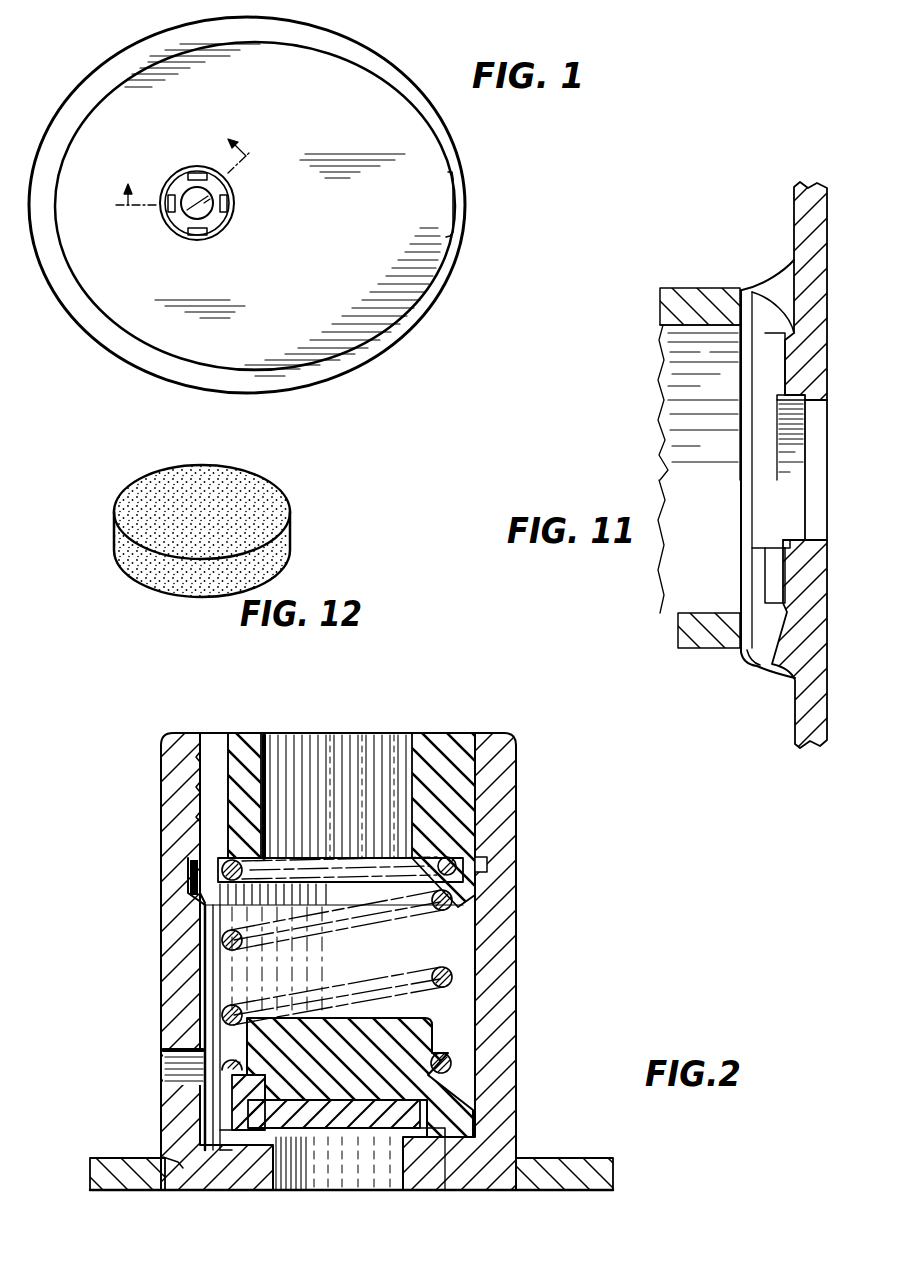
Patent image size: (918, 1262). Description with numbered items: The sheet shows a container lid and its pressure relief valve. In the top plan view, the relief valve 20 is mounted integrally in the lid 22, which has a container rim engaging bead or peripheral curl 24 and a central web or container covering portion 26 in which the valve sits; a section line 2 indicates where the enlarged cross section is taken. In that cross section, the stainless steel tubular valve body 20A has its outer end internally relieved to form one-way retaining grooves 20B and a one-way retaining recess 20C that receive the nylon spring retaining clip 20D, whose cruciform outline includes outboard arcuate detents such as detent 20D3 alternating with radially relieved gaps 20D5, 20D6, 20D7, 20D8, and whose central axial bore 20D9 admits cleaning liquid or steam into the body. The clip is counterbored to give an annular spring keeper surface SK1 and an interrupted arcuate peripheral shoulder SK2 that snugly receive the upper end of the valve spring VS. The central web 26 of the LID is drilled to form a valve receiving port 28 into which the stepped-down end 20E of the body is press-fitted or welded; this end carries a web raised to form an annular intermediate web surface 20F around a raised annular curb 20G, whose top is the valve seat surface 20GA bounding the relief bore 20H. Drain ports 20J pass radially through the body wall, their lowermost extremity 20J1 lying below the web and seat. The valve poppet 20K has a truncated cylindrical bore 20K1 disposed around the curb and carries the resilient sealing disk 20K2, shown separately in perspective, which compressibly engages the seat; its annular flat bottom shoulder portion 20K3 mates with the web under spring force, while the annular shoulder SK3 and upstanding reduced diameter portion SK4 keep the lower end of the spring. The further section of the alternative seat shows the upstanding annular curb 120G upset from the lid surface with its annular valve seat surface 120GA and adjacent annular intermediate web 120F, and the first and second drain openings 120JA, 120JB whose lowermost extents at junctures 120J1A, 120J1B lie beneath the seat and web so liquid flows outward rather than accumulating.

In FIG. 1, the relief valve 20 is at (232, 195).
In FIG. 2, the relief valve 20 is at (579, 930).
In FIG. 2, the tubular valve body 20A is at (517, 794).
In FIG. 2, the one-way retaining grooves 20B is at (196, 817).
In FIG. 2, the one-way retaining recess 20C is at (187, 884).
In FIG. 1, the spring retaining clip 20D is at (214, 221).
In FIG. 2, the spring retaining clip 20D is at (438, 758).
In FIG. 2, the outboard arcuate detent 20D3 is at (484, 876).
In FIG. 1, the radially relieved gap 20D5 is at (166, 208).
In FIG. 2, the radially relieved gap 20D5 is at (216, 770).
In FIG. 1, the radially relieved gap 20D6 is at (196, 175).
In FIG. 1, the radially relieved gap 20D7 is at (226, 203).
In FIG. 1, the radially relieved gap 20D8 is at (196, 235).
In FIG. 1, the axial enlarged bore 20D9 is at (187, 235).
In FIG. 2, the axial enlarged bore 20D9 is at (352, 781).
In FIG. 2, the stepped-down end 20E is at (505, 1165).
In FIG. 2, the annular intermediate web surface 20F is at (226, 1130).
In FIG. 2, the raised annular curb 20G is at (326, 1102).
In FIG. 2, the valve seat surface 20GA is at (410, 1140).
In FIG. 2, the relief bore 20H is at (355, 1172).
In FIG. 2, the drain port 20J is at (165, 1056).
In FIG. 2, the lowermost extremity of drain port 20J1 is at (225, 1150).
In FIG. 2, the valve poppet 20K is at (356, 1064).
In FIG. 2, the truncated cylindrical bore 20K1 is at (355, 1106).
In FIG. 12, the resilient sealing disk 20K2 is at (224, 525).
In FIG. 2, the resilient sealing disk 20K2 is at (302, 1135).
In FIG. 2, the annular flat bottom shoulder portion 20K3 is at (445, 1145).
In FIG. 1, the lid 22 is at (456, 252).
In FIG. 1, the peripheral curl 24 is at (411, 310).
In FIG. 1, the central web 26 is at (316, 328).
In FIG. 2, the central web 26 is at (598, 1192).
In FIG. 2, the valve receiving port 28 is at (180, 1162).
In FIG. 1, the section line 2 is at (181, 159).
In FIG. 2, the annular spring keeper surface SK1 is at (388, 860).
In FIG. 2, the interrupted arcuate peripheral shoulder SK2 is at (219, 863).
In FIG. 2, the annular shoulder SK3 is at (450, 1072).
In FIG. 2, the upstanding reduced diameter portion SK4 is at (428, 1045).
In FIG. 2, the valve spring VS is at (218, 944).
In FIG. 2, the lid LID is at (580, 1170).
In FIG. 11, the first drain opening 120JA is at (778, 264).
In FIG. 11, the juncture 120J1A is at (747, 292).
In FIG. 11, the annular valve seat surface 120GA is at (777, 398).
In FIG. 11, the upstanding annular curb 120G is at (780, 545).
In FIG. 11, the annular intermediate web 120F is at (784, 571).
In FIG. 11, the juncture 120J1B is at (760, 658).
In FIG. 11, the second drain opening 120JB is at (773, 672).